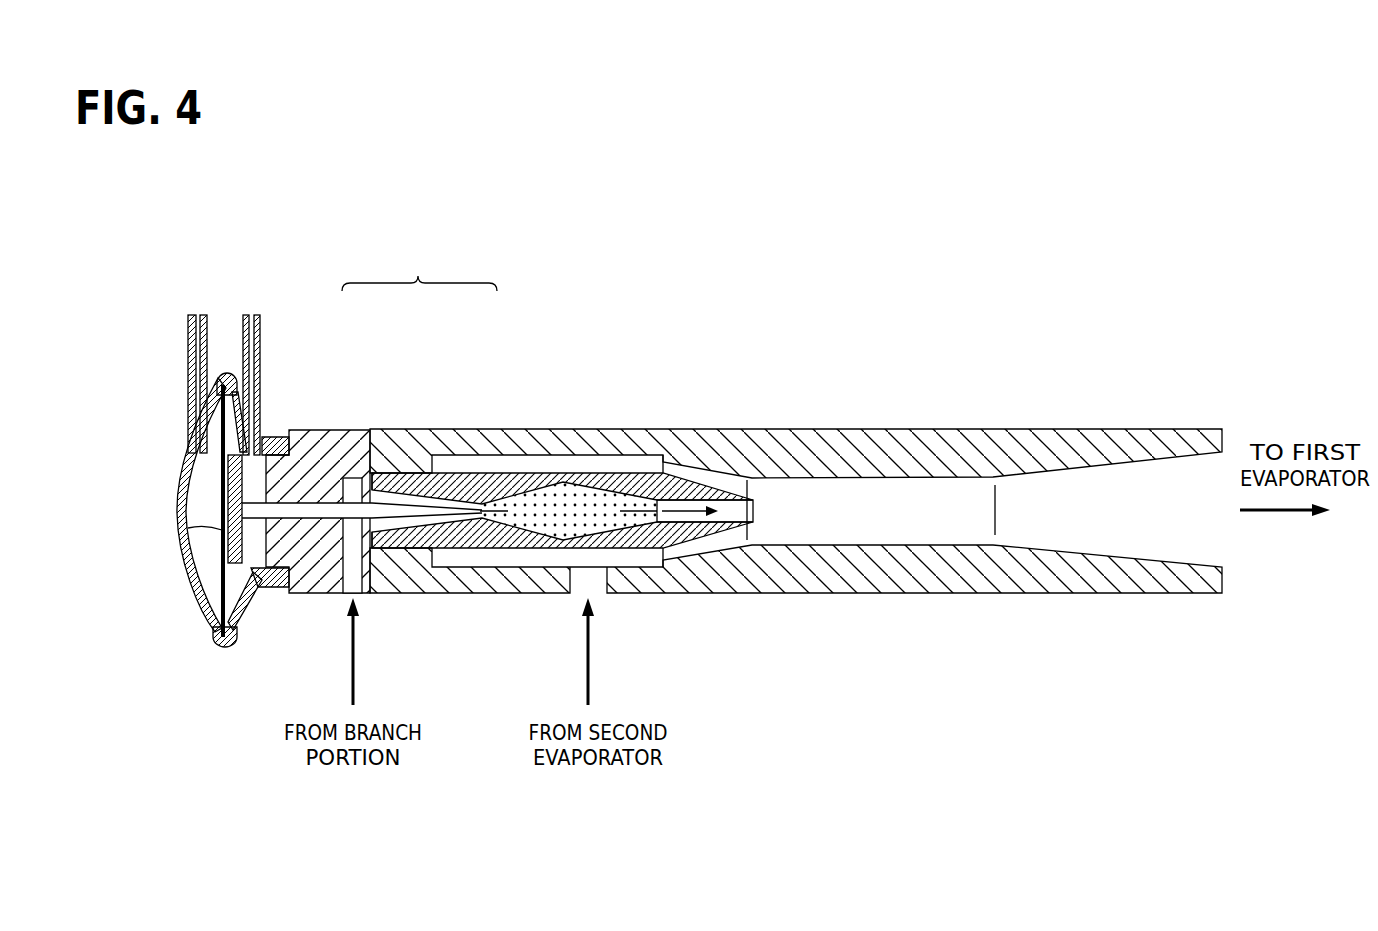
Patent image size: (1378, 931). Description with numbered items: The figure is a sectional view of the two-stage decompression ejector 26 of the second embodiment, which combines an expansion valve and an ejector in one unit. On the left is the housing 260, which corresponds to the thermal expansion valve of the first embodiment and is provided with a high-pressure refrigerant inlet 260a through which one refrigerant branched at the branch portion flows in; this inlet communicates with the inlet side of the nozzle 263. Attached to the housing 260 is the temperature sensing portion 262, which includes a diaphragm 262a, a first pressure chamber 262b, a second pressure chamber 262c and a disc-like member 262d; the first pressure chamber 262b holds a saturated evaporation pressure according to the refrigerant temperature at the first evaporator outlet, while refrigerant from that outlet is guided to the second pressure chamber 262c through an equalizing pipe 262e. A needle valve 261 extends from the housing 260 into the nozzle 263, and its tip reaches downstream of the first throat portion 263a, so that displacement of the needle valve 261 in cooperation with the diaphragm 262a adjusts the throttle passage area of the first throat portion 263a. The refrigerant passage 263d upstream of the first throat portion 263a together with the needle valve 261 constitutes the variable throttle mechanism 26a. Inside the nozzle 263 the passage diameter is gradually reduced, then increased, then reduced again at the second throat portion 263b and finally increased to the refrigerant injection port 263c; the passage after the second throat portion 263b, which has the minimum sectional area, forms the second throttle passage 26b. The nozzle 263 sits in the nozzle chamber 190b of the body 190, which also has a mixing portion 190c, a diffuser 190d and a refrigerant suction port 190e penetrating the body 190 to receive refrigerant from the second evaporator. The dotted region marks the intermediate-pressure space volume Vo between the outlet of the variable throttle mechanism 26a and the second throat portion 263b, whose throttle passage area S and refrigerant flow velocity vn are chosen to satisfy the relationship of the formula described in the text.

The two-stage decompression ejector 26 is at (738, 310).
The variable throttle mechanism 26a is at (419, 270).
The second throttle passage 26b is at (765, 495).
The body 190 is at (928, 455).
The nozzle chamber 190b is at (650, 560).
The mixing portion 190c is at (887, 513).
The diffuser 190d is at (1087, 518).
The refrigerant suction port 190e is at (567, 596).
The housing 260 is at (327, 432).
The high-pressure refrigerant inlet 260a is at (362, 596).
The needle valve 261 is at (358, 510).
The temperature sensing portion 262 is at (165, 458).
The diaphragm 262a is at (205, 578).
The first pressure chamber 262b is at (203, 530).
The second pressure chamber 262c is at (246, 582).
The disc-like member 262d is at (213, 496).
The equalizing pipe 262e is at (262, 348).
The nozzle 263 is at (624, 412).
The first throat portion 263a is at (484, 504).
The second throat portion 263b is at (625, 478).
The refrigerant injection port 263c is at (757, 503).
The refrigerant passage 263d is at (462, 470).
The intermediate-pressure space volume Vo is at (563, 498).
The flow velocity vn is at (746, 490).
The throttle passage area S is at (625, 552).